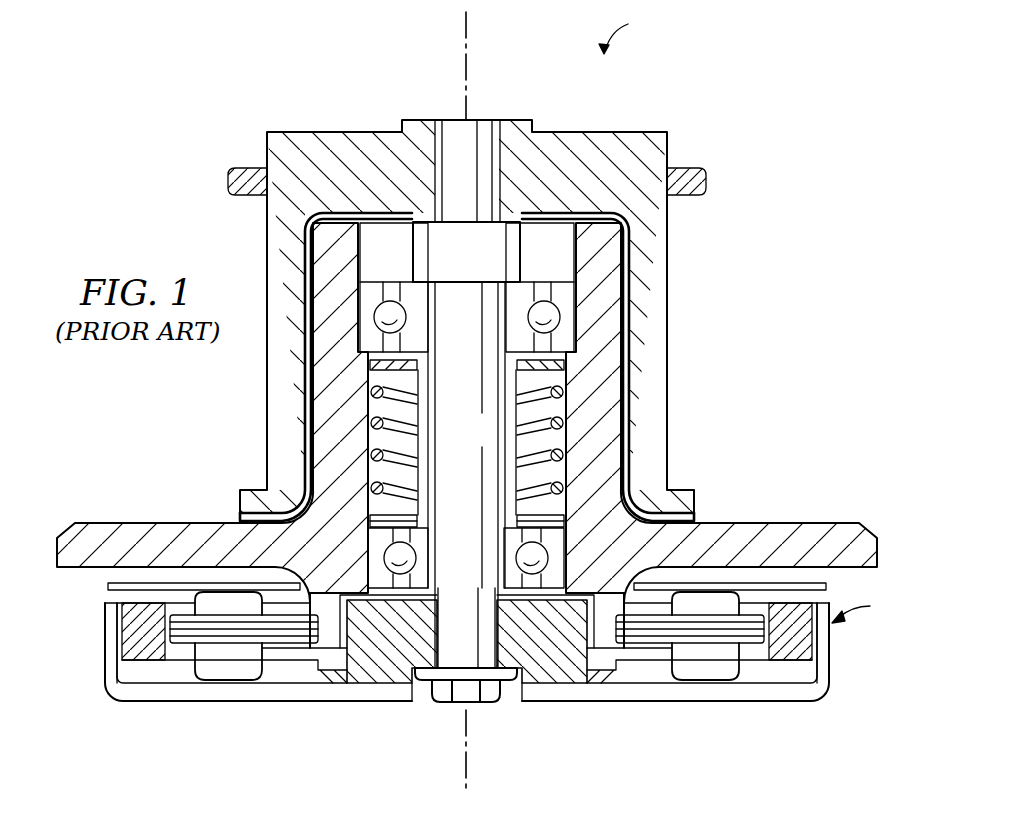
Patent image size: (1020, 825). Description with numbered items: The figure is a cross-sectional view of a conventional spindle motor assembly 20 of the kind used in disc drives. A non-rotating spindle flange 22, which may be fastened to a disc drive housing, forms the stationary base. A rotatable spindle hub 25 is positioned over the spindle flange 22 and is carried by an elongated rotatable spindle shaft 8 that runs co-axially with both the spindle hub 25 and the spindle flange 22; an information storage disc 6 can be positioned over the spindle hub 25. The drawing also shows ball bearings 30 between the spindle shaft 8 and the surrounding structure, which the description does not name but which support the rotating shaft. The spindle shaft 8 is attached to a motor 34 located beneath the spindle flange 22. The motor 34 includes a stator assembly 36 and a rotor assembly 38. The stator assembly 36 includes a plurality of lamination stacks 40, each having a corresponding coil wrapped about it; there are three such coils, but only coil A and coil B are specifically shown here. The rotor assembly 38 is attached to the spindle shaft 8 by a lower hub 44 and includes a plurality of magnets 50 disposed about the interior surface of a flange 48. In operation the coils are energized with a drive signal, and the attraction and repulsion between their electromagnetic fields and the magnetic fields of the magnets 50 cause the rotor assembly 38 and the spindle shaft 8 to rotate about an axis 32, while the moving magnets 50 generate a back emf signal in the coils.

The spindle motor assembly 20 is at (629, 29).
The axis 32 is at (470, 50).
The spindle hub 25 is at (350, 137).
The information storage disc 6 is at (243, 168).
The spindle shaft 8 is at (457, 441).
The bearing 30 is at (390, 301).
The spindle flange 22 is at (157, 532).
The lower hub 44 is at (378, 660).
The stator assembly 36 is at (285, 672).
The rotor assembly 38 is at (257, 701).
The flange 48 is at (112, 647).
The magnets 50 is at (150, 655).
The lamination stacks 40 is at (183, 632).
The coil B is at (222, 672).
The coil A is at (700, 672).
The motor 34 is at (821, 645).